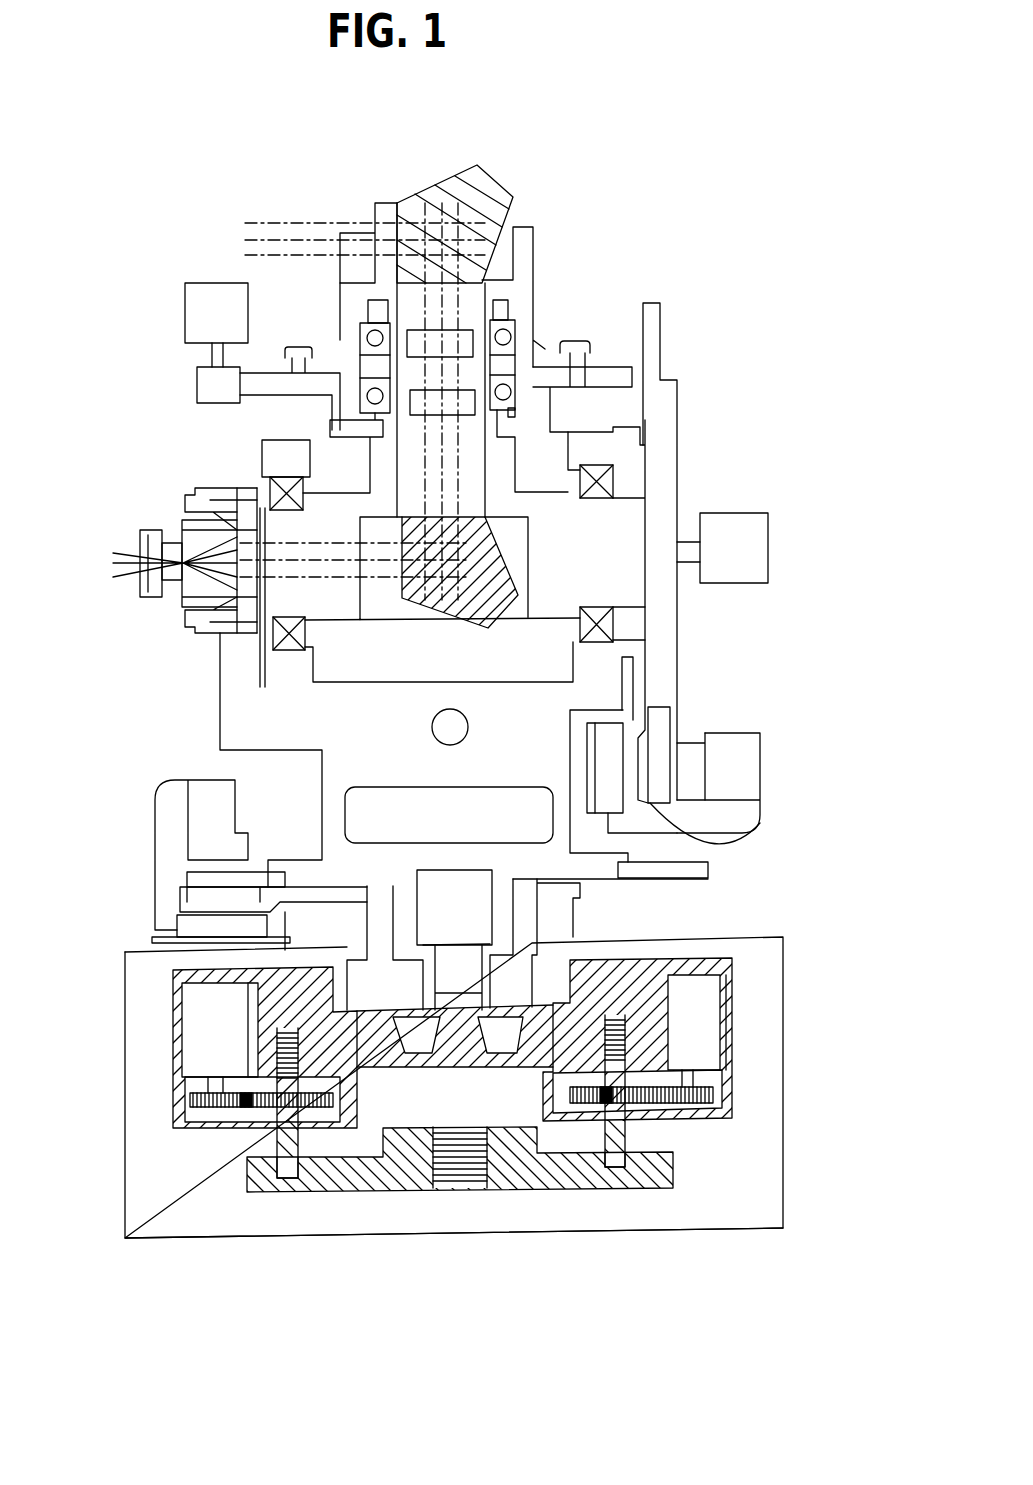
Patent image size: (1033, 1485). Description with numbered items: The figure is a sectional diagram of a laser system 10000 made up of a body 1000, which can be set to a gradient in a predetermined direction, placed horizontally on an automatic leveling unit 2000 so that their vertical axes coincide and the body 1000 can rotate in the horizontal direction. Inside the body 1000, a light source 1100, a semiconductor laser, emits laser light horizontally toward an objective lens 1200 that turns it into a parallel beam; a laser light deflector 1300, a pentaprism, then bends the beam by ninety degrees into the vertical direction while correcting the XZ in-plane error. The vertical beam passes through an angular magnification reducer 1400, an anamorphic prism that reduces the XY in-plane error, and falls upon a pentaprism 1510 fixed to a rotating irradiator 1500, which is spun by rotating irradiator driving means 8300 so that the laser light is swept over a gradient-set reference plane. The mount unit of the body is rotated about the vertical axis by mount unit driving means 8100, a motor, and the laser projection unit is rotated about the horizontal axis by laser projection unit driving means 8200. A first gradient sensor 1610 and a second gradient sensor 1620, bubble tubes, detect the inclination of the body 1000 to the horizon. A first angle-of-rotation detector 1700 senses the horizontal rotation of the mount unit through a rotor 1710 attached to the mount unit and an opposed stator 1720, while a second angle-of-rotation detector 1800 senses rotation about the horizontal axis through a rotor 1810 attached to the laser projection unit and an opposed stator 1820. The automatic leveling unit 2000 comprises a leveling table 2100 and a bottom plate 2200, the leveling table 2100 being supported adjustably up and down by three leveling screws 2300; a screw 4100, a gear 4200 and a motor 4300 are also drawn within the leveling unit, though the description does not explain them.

The laser system 10000 is at (428, 1266).
The body 1000 is at (706, 453).
The light source 1100 is at (172, 547).
The objective lens 1200 is at (212, 577).
The laser light deflector 1300 is at (513, 583).
The angular magnification reducer 1400 is at (418, 387).
The rotating irradiator 1500 is at (535, 252).
The pentaprism 1510 is at (505, 182).
The first gradient sensor 1610 is at (432, 727).
The second gradient sensor 1620 is at (522, 798).
The first angle-of-rotation detector 1700 is at (147, 777).
The rotor 1710 is at (183, 882).
The stator 1720 is at (180, 900).
The second angle-of-rotation detector 1800 is at (700, 663).
The rotor 1810 is at (662, 338).
The stator 1820 is at (710, 843).
The automatic leveling unit 2000 is at (796, 1098).
The leveling table 2100 is at (727, 973).
The bottom plate 2200 is at (667, 1187).
The leveling screw 2300 is at (305, 1140).
The feed screw 4100 is at (337, 1100).
The gear 4200 is at (210, 1107).
The drive motor 4300 is at (197, 1017).
The mount unit driving means 8100 is at (432, 870).
The laser projection unit driving means 8200 is at (770, 548).
The rotating irradiator driving means 8300 is at (207, 283).